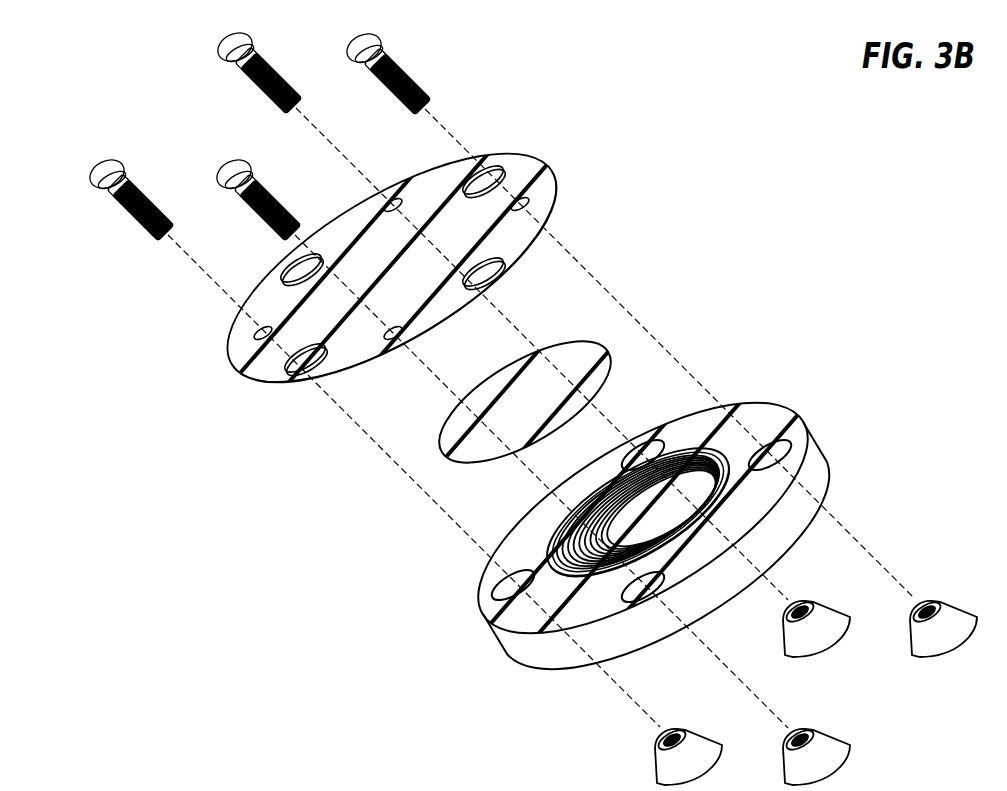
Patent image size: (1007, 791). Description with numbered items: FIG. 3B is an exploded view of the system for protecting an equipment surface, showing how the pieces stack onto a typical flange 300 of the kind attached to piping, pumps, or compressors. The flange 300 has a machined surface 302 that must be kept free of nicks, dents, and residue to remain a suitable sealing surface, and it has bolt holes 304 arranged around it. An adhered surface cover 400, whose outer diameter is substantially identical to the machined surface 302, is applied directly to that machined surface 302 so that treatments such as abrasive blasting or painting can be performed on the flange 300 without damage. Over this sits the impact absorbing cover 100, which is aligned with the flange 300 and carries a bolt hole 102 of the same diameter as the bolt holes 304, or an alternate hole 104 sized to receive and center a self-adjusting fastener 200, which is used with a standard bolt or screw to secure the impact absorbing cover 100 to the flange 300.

The impact absorbing cover 100 is at (563, 160).
The bolt hole 102 is at (293, 268).
The alternate hole 104 is at (387, 204).
The self-adjusting fastener 200 is at (831, 597).
The flange 300 is at (659, 517).
The machined surface 302 is at (572, 572).
The bolt holes 304 is at (626, 461).
The adhered surface cover 400 is at (575, 333).